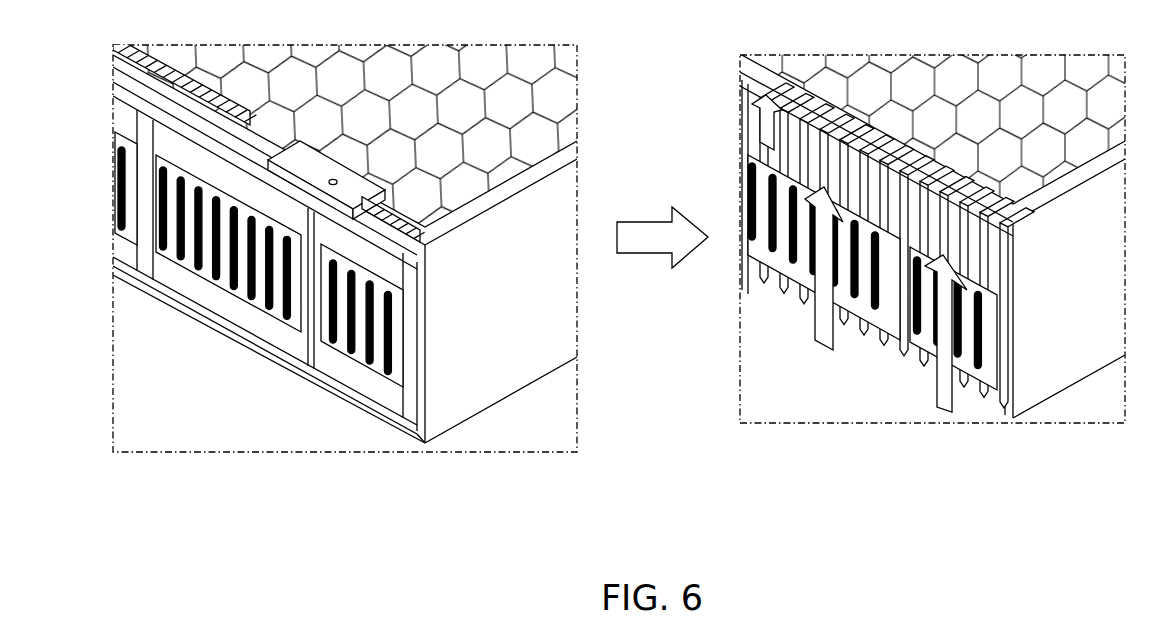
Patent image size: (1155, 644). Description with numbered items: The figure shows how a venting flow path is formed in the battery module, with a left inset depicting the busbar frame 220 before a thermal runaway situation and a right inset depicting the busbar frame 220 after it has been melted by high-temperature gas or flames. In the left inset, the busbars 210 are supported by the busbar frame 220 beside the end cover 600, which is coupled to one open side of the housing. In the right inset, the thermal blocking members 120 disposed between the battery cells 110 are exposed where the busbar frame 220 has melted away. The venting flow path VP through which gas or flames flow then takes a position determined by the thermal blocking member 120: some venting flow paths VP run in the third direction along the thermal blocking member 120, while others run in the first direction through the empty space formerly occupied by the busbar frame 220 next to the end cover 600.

The battery cell 110 is at (993, 387).
The thermal blocking member 120 is at (750, 260).
The busbar 210 is at (283, 320).
The busbar frame 220 is at (388, 392).
The end cover 600 is at (482, 393).
The venting flow path VP is at (752, 118).